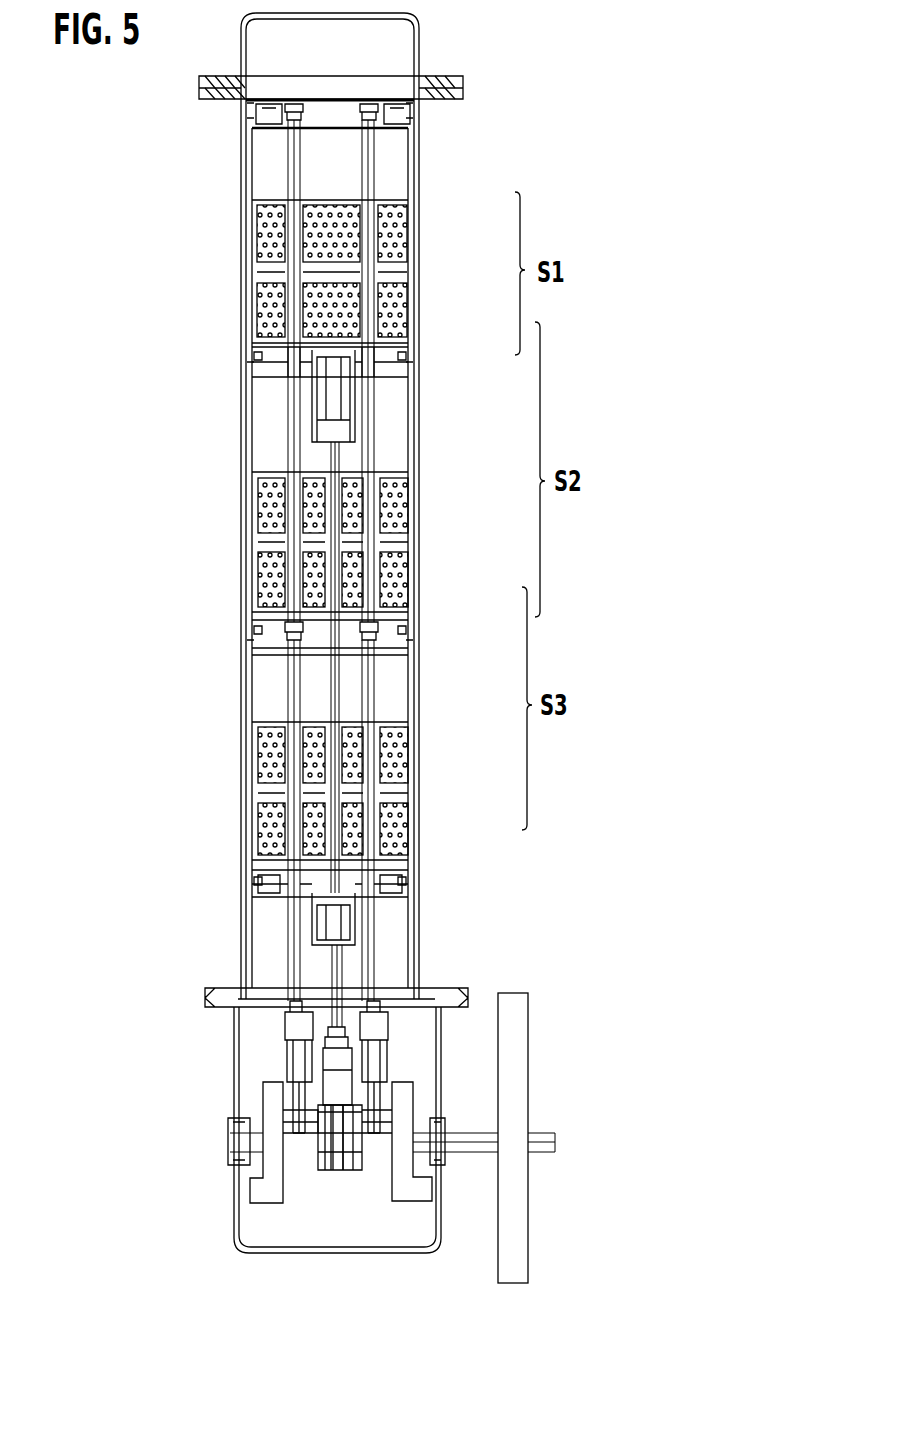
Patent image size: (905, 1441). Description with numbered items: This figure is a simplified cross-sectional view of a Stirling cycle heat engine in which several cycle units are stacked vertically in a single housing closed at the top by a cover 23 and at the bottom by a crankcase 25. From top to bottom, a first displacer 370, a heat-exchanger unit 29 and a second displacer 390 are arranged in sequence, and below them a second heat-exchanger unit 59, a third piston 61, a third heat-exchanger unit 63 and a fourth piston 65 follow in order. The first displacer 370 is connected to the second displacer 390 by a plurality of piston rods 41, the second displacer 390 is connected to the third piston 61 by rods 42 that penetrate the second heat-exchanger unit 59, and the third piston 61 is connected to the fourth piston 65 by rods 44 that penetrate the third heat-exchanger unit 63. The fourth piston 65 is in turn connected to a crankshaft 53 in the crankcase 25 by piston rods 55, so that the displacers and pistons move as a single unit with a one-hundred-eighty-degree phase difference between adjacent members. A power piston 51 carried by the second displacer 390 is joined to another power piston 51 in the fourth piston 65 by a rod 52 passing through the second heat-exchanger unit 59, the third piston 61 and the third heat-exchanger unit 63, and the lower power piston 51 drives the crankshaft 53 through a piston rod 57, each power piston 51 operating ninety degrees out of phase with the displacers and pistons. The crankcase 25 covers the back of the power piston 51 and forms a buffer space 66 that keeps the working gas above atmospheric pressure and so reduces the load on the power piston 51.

The cover 23 is at (422, 34).
The crankcase 25 is at (342, 1254).
The heat-exchanger unit 29 is at (400, 286).
The piston rods 41 is at (362, 165).
The rods 42 is at (368, 455).
The rods 44 is at (368, 675).
The power piston 51 is at (325, 402).
The rod 52 is at (332, 700).
The crankshaft 53 is at (245, 1140).
The piston rods 55 is at (308, 948).
The piston rod 57 is at (333, 990).
The second heat-exchanger unit 59 is at (412, 541).
The third piston 61 is at (420, 636).
The third heat-exchanger unit 63 is at (417, 787).
The fourth piston 65 is at (420, 880).
The buffer space 66 is at (378, 1220).
The first displacer 370 is at (397, 130).
The second displacer 390 is at (415, 363).